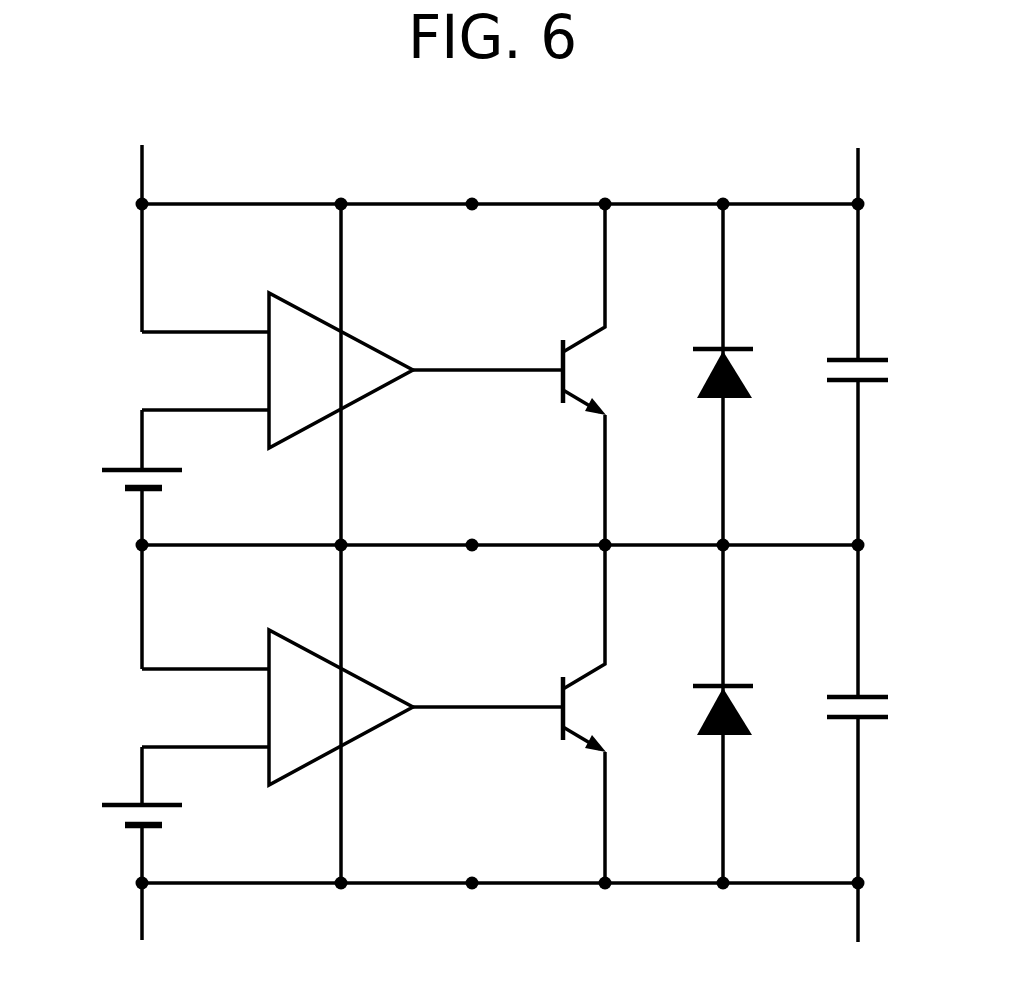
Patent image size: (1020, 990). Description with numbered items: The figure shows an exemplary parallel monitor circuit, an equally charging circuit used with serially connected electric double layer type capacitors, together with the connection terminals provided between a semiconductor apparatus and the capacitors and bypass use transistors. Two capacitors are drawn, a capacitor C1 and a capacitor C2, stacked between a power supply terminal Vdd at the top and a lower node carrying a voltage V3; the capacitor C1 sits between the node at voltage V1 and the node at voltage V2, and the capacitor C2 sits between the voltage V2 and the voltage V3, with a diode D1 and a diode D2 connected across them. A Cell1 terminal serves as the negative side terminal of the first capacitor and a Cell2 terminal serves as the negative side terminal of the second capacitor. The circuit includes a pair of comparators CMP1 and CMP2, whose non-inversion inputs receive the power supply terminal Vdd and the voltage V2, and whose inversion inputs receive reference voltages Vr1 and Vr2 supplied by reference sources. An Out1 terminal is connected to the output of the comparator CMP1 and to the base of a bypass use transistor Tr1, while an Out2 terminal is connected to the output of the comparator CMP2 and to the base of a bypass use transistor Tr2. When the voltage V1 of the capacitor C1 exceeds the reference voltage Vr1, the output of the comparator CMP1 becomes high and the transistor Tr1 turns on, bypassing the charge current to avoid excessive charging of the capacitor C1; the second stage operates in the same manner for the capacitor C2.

The power supply terminal Vdd is at (472, 211).
The voltage of capacitor C1 V1 is at (826, 234).
The voltage V2 is at (826, 576).
The voltage V3 is at (829, 864).
The Cell1 terminal Cell1 is at (472, 552).
The Cell2 terminal Cell2 is at (472, 890).
The comparator CMP1 is at (352, 370).
The comparator CMP2 is at (352, 707).
The Out1 terminal Out1 is at (472, 377).
The Out2 terminal Out2 is at (472, 714).
The bypass use transistor Tr1 is at (601, 374).
The bypass use transistor Tr2 is at (601, 714).
The diode D1 is at (745, 374).
The diode D2 is at (745, 714).
The capacitor C1 is at (880, 375).
The capacitor C2 is at (880, 712).
The reference voltage Vr1 is at (112, 474).
The reference voltage Vr2 is at (112, 811).